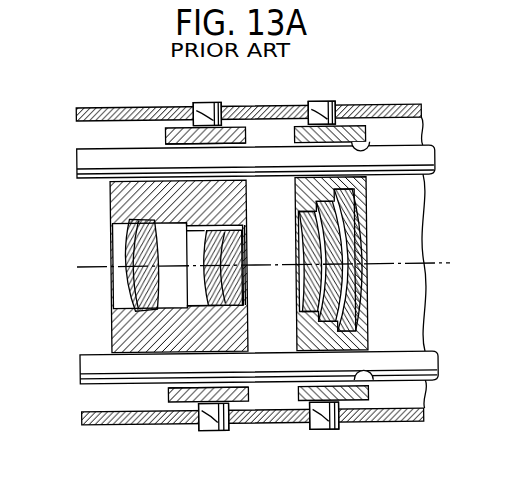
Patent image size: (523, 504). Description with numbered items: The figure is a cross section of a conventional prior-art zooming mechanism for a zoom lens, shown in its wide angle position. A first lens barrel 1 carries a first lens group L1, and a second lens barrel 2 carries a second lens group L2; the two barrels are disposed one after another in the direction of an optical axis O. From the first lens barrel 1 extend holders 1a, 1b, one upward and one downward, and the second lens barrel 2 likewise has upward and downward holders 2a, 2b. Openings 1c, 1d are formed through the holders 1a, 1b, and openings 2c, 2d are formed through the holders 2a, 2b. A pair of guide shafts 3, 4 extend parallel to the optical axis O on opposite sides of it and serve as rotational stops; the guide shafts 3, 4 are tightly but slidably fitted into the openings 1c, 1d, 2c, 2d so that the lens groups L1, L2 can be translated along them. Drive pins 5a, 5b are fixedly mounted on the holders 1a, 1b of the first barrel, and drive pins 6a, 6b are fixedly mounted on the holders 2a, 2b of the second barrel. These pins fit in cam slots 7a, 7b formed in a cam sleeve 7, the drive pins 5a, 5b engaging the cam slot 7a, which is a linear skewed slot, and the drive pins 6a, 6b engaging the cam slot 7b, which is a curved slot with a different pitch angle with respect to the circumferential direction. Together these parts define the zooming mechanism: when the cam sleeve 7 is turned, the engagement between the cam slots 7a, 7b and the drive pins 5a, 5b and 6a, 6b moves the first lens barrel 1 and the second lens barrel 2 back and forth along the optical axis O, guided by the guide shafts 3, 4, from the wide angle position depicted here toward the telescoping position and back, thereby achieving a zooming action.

The first lens barrel 1 is at (127, 203).
The holder 1a is at (178, 133).
The holder 1b is at (180, 392).
The opening 1c is at (178, 146).
The opening 1d is at (181, 388).
The second lens barrel 2 is at (350, 182).
The holder 2a is at (357, 136).
The holder 2b is at (360, 407).
The opening 2c is at (370, 147).
The opening 2d is at (361, 370).
The guide shaft 3 is at (88, 162).
The guide shaft 4 is at (90, 370).
The drive pin 5a is at (210, 104).
The drive pin 5b is at (213, 430).
The drive pin 6a is at (323, 110).
The drive pin 6b is at (327, 430).
The cam sleeve 7 is at (418, 423).
The cam slot 7a is at (207, 110).
The cam slot 7b is at (321, 108).
The first lens group L1 is at (143, 250).
The second lens group L2 is at (363, 230).
The optical axis O is at (432, 265).